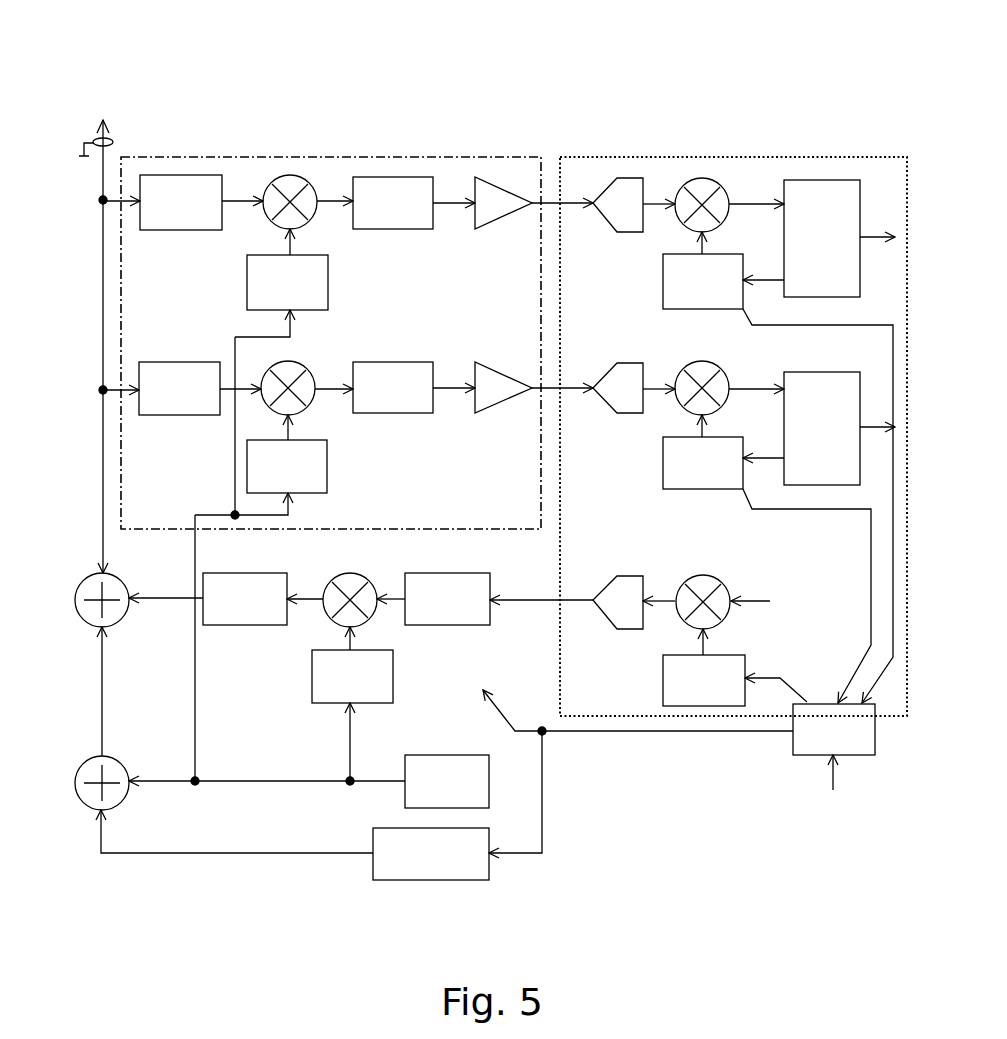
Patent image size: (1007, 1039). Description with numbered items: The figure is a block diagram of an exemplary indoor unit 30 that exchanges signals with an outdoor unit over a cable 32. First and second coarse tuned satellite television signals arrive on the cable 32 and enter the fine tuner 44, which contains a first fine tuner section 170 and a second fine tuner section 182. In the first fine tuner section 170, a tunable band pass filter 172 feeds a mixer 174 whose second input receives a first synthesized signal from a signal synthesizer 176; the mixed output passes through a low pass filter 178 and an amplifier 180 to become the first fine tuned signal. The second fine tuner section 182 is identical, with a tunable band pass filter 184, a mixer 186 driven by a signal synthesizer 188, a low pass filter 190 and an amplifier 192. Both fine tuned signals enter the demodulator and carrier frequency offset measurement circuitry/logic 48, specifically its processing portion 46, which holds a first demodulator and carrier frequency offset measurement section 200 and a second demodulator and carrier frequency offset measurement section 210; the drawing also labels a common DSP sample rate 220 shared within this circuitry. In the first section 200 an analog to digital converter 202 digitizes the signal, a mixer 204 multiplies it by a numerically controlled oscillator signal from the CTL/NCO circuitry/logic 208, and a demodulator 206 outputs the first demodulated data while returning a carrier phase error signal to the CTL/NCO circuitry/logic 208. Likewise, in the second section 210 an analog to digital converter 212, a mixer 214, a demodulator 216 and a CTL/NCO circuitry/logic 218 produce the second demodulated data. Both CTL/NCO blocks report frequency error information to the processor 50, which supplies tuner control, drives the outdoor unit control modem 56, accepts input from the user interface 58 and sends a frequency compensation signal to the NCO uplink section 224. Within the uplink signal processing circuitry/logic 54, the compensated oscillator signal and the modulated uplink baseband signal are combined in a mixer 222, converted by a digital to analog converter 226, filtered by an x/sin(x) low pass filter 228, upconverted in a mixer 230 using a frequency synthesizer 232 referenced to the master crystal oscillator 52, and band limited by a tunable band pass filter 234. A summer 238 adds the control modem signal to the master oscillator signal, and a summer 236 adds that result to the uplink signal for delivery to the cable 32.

The indoor unit 30 is at (598, 76).
The cable 32 is at (104, 165).
The fine tuner 44 is at (453, 157).
The processing portion 46 is at (622, 277).
The demodulator and carrier frequency offset measurement circuitry/logic 48 is at (665, 157).
The processor 50 is at (795, 757).
The master crystal oscillator 52 is at (410, 760).
The uplink signal processing circuitry/logic 54 is at (260, 677).
The outdoor unit control modem 56 is at (430, 880).
The user interface 58 is at (805, 828).
The first fine tuner section 170 is at (199, 259).
The tunable band pass filter 172 is at (152, 225).
The mixer 174 is at (320, 212).
The signal synthesizer 176 is at (328, 288).
The low pass filter 178 is at (402, 222).
The amplifier 180 is at (490, 215).
The second fine tuner section 182 is at (190, 464).
The tunable band pass filter 184 is at (150, 407).
The mixer 186 is at (320, 397).
The signal synthesizer 188 is at (330, 478).
The low pass filter 190 is at (390, 403).
The amplifier 192 is at (487, 400).
The first demodulator and carrier frequency offset measurement section 200 is at (613, 250).
The analog to digital converter 202 is at (627, 185).
The mixer 204 is at (705, 188).
The demodulator 206 is at (810, 180).
The CTL/NCO circuitry/logic 208 is at (712, 257).
The second demodulator and carrier frequency offset measurement section 210 is at (622, 439).
The analog to digital converter 212 is at (622, 363).
The mixer 214 is at (702, 372).
The demodulator 216 is at (800, 383).
The CTL/NCO circuitry/logic 218 is at (677, 483).
The common DSP sample rate 220 is at (632, 550).
The mixer 222 is at (700, 578).
The NCO uplink section 224 is at (665, 672).
The digital to analog converter 226 is at (628, 622).
The low pass filter 228 is at (455, 575).
The mixer 230 is at (352, 573).
The frequency synthesizer 232 is at (385, 668).
The tunable band pass filter 234 is at (218, 617).
The summer 236 is at (110, 612).
The summer 238 is at (110, 768).